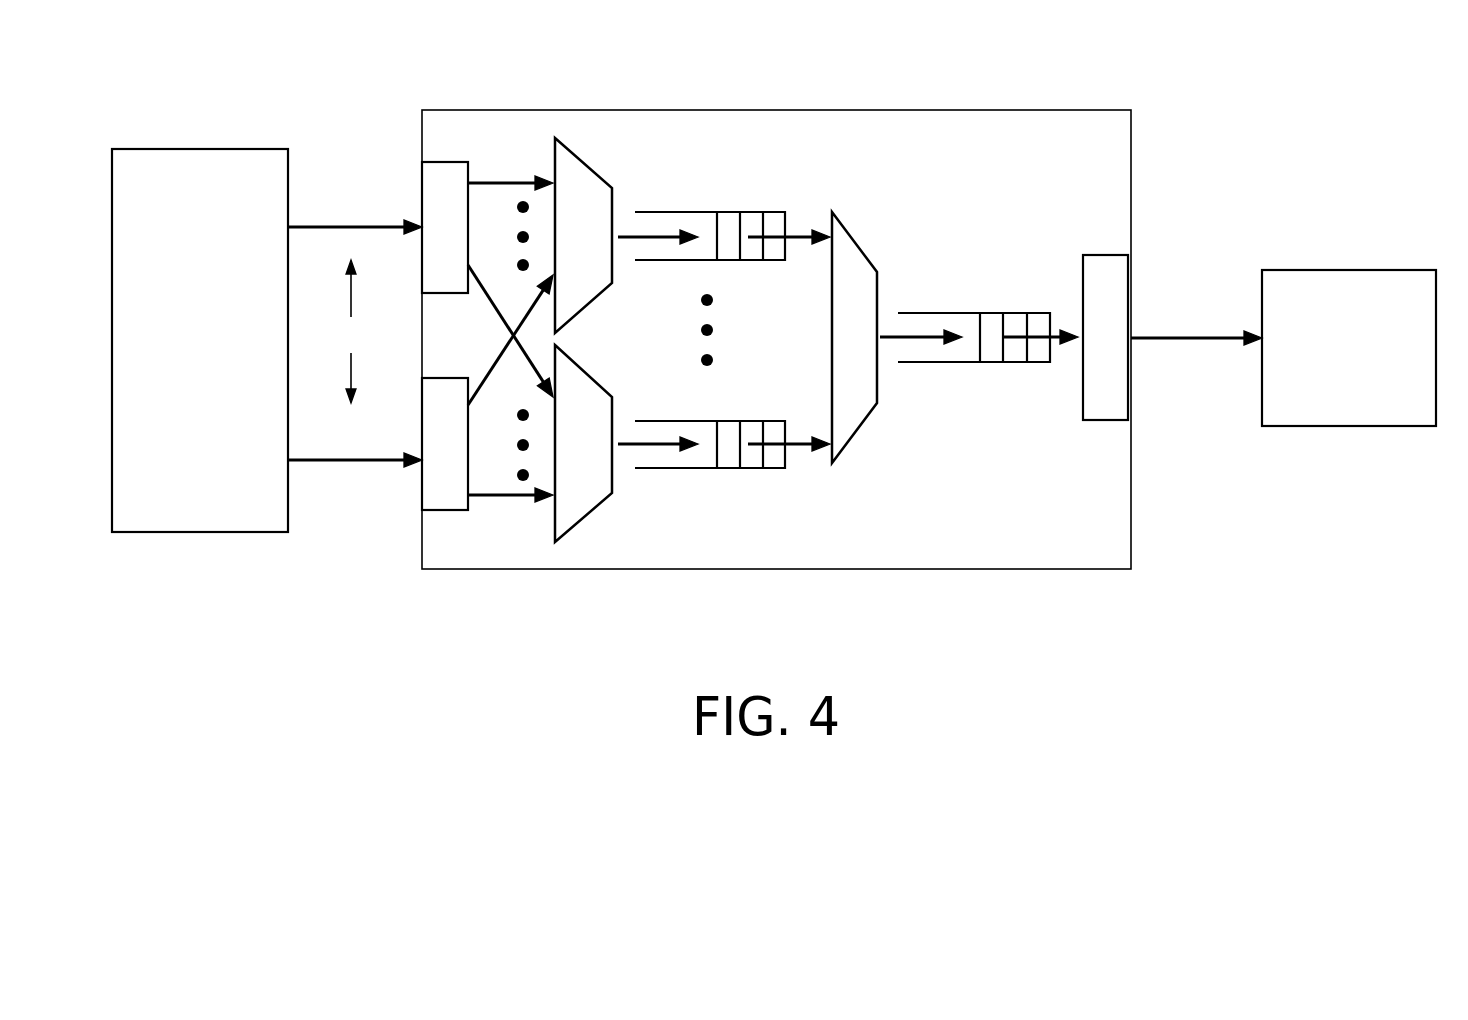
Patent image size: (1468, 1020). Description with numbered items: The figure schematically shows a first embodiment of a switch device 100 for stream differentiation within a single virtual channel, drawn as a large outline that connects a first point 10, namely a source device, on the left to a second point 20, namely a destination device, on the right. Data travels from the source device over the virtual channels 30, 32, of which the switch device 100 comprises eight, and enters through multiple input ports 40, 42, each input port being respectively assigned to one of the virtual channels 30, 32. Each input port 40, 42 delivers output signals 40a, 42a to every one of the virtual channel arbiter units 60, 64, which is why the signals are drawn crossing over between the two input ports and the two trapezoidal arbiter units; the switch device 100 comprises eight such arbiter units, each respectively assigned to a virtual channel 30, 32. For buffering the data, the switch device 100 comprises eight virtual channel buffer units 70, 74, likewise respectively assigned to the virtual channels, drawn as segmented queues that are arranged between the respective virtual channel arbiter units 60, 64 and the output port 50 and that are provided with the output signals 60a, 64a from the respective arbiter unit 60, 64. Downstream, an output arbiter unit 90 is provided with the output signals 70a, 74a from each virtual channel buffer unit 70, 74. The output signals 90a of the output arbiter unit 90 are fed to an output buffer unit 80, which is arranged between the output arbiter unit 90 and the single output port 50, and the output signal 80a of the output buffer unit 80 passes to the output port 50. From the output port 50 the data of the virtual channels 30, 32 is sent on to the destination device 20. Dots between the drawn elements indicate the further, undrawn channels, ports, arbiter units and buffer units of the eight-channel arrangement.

The first point 10 is at (206, 149).
The second point 20 is at (1352, 270).
The virtual channel 30 is at (405, 344).
The virtual channel 32 is at (1188, 335).
The input port 40 is at (445, 162).
The input port 42 is at (440, 512).
The output signal 40a is at (503, 182).
The output signal 42a is at (490, 378).
The output port 50 is at (1105, 255).
The virtual channel arbiter unit 60 is at (612, 265).
The virtual channel arbiter unit 64 is at (612, 412).
The output signal 60a is at (628, 230).
The output signal 64a is at (625, 452).
The virtual channel buffer unit 70 is at (716, 212).
The virtual channel buffer unit 74 is at (708, 470).
The output signal 70a is at (795, 232).
The output signal 74a is at (795, 450).
The output buffer unit 80 is at (972, 312).
The output signal 80a is at (1060, 350).
The output arbiter unit 90 is at (858, 430).
The output signal 90a is at (890, 333).
The switch device 100 is at (912, 109).